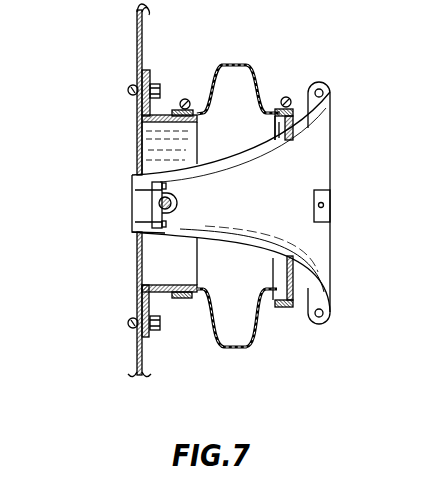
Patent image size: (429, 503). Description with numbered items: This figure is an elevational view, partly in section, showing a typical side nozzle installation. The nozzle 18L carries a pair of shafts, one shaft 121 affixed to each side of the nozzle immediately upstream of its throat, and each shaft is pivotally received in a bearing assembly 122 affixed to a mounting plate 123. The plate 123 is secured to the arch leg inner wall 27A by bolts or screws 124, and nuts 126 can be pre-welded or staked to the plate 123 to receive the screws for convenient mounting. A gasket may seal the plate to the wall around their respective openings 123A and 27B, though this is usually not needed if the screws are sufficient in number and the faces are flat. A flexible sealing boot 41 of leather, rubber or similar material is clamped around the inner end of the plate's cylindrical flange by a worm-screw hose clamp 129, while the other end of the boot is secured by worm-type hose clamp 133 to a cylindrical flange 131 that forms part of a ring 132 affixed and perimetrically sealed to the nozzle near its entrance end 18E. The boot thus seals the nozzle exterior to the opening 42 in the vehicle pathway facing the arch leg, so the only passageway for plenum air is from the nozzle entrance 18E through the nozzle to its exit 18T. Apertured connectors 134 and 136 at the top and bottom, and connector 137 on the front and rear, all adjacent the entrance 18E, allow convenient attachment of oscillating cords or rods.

The nuts 126 is at (152, 80).
The worm-screw hose clamp 129 is at (186, 99).
The flexible sealing boot 41 is at (244, 62).
The worm-type hose clamp 133 is at (291, 96).
The apertured connector 134 is at (330, 92).
The bolts or screws 124 is at (130, 88).
The opening in wall 27B is at (136, 128).
The opening in vehicle pathway 42 is at (133, 148).
The cylindrical flange 131 is at (274, 135).
The nozzle 18L is at (313, 170).
The bearing assembly 122 is at (173, 193).
The shaft 121 is at (173, 212).
The apertured connector 137 is at (322, 198).
The nozzle exit 18T is at (131, 215).
The nozzle entrance 18E is at (332, 245).
The opening in plate 123A is at (145, 288).
The ring 132 is at (273, 280).
The apertured connector 136 is at (320, 320).
The arch leg inner wall 27A is at (137, 347).
The mounting plate 123 is at (148, 343).